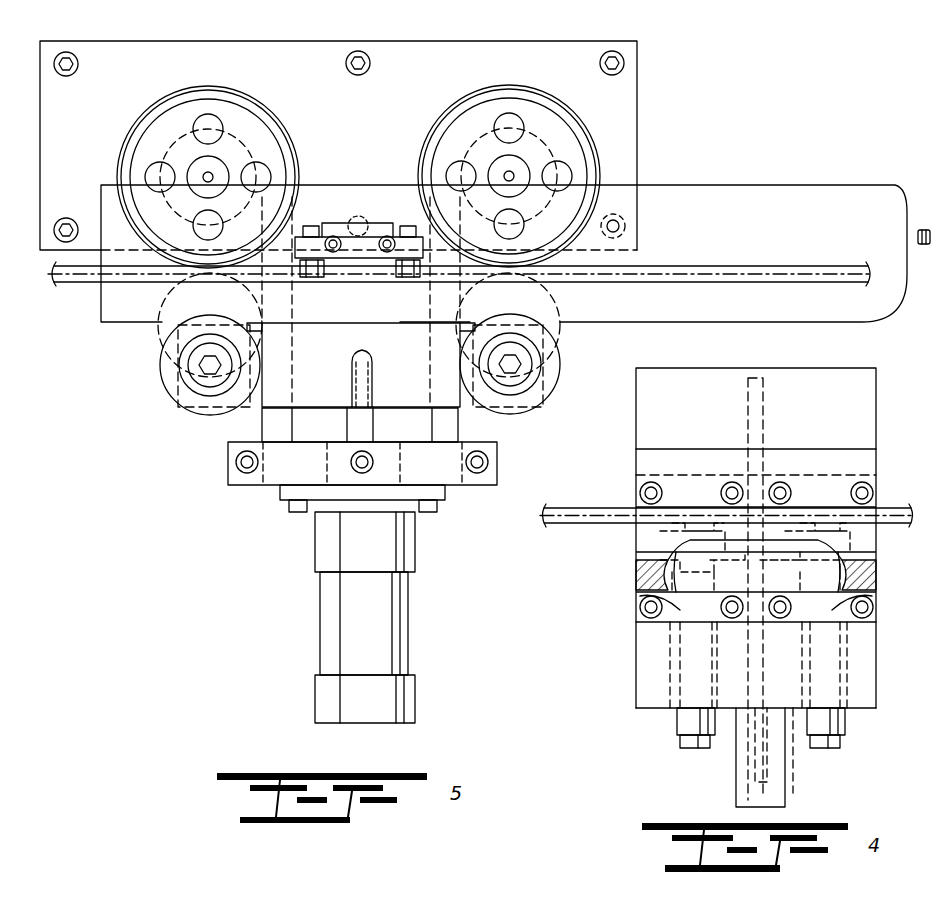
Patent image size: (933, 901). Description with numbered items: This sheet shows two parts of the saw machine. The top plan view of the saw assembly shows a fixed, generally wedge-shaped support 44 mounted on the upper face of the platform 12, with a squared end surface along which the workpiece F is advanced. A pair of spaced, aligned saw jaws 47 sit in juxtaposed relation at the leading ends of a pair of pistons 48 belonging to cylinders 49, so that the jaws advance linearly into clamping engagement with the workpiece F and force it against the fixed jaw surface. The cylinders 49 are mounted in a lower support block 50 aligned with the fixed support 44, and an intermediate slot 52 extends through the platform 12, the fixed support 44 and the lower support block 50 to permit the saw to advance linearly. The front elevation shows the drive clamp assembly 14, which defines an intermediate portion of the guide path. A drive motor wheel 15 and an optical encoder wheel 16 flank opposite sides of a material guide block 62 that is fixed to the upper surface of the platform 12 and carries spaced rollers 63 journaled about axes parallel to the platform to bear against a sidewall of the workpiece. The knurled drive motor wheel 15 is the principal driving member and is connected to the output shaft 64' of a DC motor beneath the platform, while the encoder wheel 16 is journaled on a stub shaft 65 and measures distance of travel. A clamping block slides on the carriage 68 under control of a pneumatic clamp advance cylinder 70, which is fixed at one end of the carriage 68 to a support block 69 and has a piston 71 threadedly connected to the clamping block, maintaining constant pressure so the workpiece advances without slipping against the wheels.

In FIG. 5, the platform 12 is at (688, 184).
In FIG. 5, the drive clamp assembly 14 is at (96, 304).
In FIG. 5, the drive motor wheel 15 is at (208, 89).
In FIG. 5, the optical encoder wheel 16 is at (505, 88).
In FIG. 5, the material guide block 62 is at (359, 222).
In FIG. 5, the rollers 63 is at (408, 278).
In FIG. 5, the output shaft 64' is at (162, 154).
In FIG. 5, the stub shaft 65 is at (528, 165).
In FIG. 5, the carriage 68 is at (270, 423).
In FIG. 5, the support block 69 is at (232, 478).
In FIG. 5, the pneumatic clamp advance cylinder 70 is at (327, 596).
In FIG. 5, the piston 71 is at (380, 427).
In FIG. 4, the fixed support 44 is at (640, 416).
In FIG. 4, the intermediate slot 52 is at (766, 394).
In FIG. 4, the workpiece F is at (572, 509).
In FIG. 4, the saw jaws 47 is at (640, 576).
In FIG. 4, the pistons 48 is at (662, 612).
In FIG. 4, the cylinders 49 is at (676, 726).
In FIG. 4, the lower support block 50 is at (640, 676).